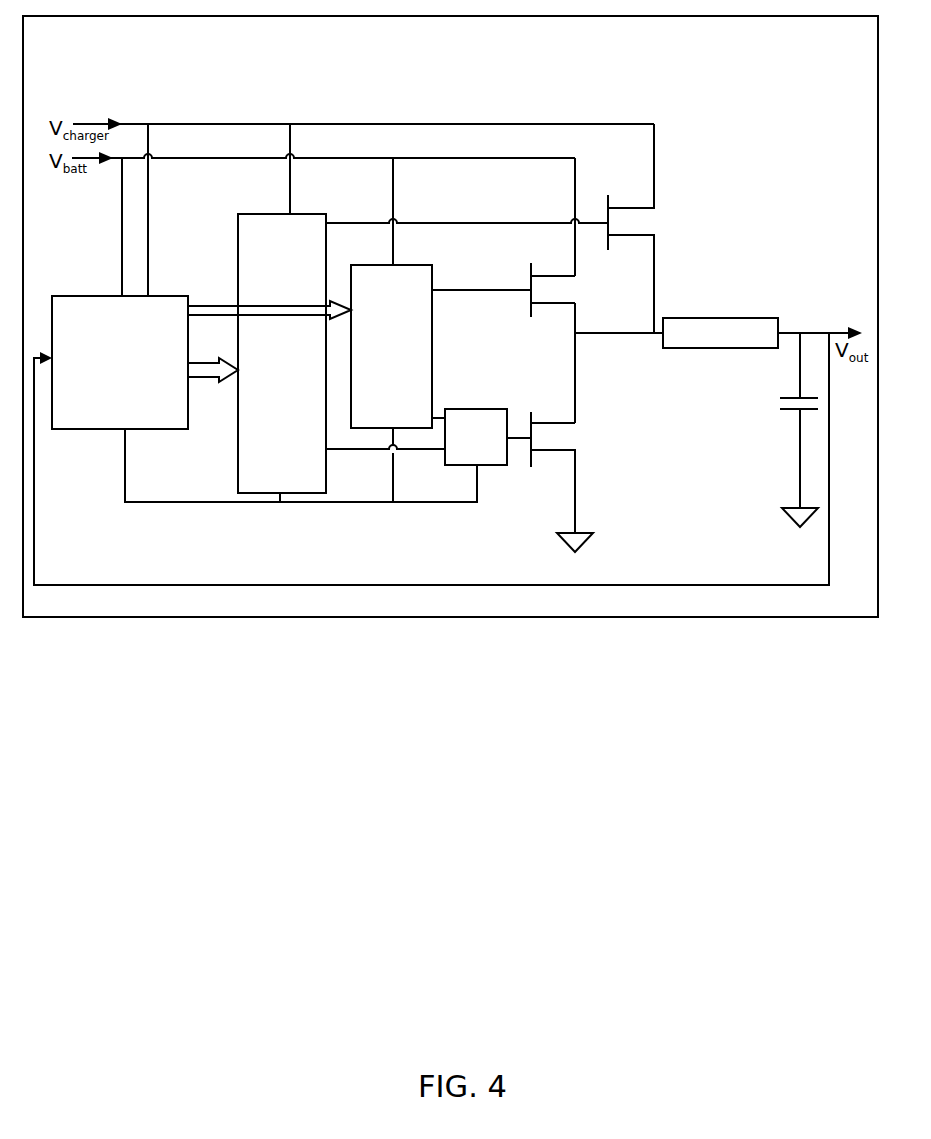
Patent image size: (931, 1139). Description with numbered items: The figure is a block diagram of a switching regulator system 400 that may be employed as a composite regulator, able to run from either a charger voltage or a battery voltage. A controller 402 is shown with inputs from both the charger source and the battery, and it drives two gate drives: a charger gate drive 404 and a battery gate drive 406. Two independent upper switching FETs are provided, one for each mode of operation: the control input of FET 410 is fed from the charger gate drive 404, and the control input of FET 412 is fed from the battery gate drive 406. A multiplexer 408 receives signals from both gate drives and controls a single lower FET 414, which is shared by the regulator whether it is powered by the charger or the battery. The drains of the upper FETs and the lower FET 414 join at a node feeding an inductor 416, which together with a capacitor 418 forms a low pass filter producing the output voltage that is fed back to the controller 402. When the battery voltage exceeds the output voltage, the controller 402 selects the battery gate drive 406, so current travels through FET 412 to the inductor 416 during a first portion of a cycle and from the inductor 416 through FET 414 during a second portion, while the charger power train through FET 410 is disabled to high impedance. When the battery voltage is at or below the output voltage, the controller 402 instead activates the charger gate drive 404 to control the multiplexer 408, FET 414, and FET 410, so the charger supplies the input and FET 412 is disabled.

The system 400 is at (100, 62).
The controller 402 is at (113, 343).
The charger gate drive 404 is at (268, 242).
The battery gate drive 406 is at (376, 292).
The multiplexer 408 is at (462, 431).
The field effect transistor 410 is at (608, 224).
The field effect transistor 412 is at (531, 293).
The field effect transistor 414 is at (531, 440).
The inductor 416 is at (693, 318).
The capacitor 418 is at (785, 410).